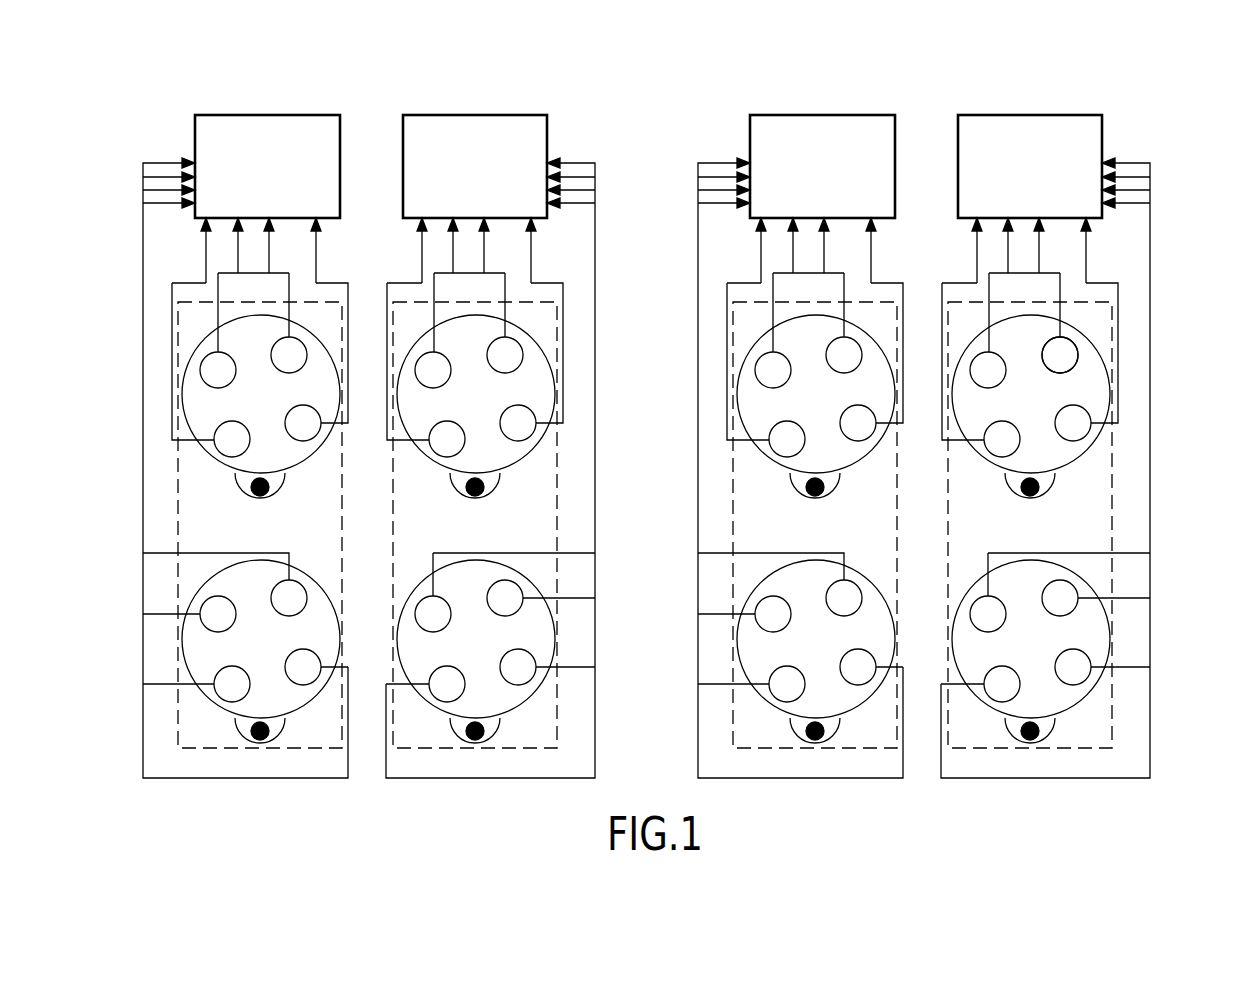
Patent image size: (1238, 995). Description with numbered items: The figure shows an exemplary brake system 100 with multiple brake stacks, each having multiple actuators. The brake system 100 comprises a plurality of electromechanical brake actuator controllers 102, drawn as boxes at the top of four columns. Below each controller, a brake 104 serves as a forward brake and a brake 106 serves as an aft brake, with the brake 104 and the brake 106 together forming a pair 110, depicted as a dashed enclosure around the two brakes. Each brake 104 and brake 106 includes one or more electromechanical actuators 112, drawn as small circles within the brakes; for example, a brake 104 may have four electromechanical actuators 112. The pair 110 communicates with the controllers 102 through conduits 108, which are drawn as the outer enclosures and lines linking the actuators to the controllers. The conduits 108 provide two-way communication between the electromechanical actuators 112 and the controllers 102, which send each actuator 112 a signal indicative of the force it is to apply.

The brake system 100 is at (132, 143).
The electromechanical brake actuator controller 102 is at (283, 115).
The brake 104 is at (212, 460).
The brake 106 is at (192, 600).
The conduit 108 is at (143, 347).
The pair 110 is at (178, 531).
The electromechanical actuator 112 is at (1070, 348).